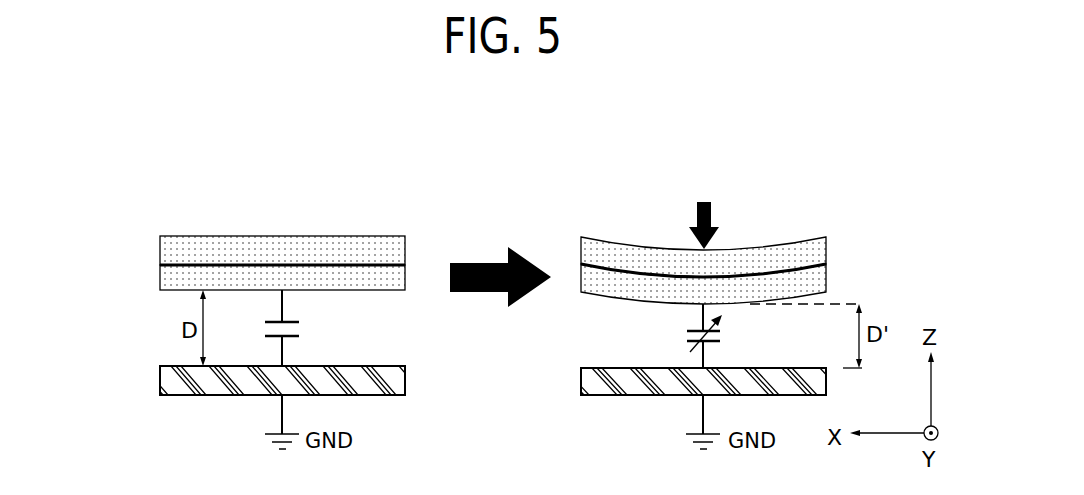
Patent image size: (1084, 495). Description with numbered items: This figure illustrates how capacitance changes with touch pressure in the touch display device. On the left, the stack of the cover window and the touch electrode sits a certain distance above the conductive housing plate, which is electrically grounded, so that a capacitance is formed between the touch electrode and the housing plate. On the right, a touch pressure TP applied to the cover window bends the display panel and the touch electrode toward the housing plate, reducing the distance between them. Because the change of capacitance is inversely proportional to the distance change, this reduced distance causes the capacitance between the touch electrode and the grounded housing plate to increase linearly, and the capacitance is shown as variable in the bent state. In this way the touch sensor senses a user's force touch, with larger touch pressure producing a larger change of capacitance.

The touch pressure TP is at (712, 210).